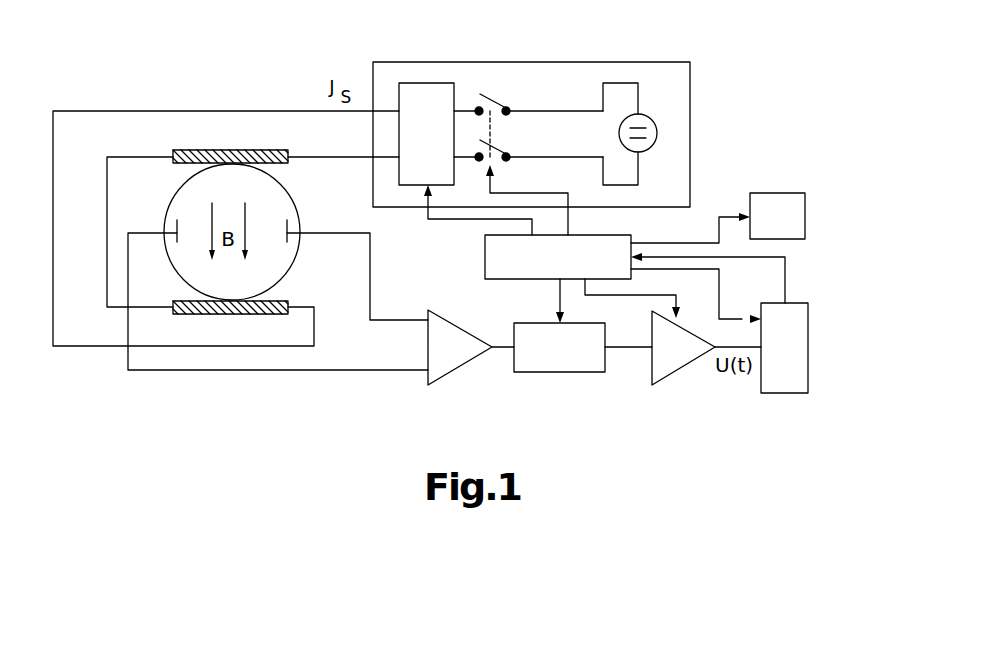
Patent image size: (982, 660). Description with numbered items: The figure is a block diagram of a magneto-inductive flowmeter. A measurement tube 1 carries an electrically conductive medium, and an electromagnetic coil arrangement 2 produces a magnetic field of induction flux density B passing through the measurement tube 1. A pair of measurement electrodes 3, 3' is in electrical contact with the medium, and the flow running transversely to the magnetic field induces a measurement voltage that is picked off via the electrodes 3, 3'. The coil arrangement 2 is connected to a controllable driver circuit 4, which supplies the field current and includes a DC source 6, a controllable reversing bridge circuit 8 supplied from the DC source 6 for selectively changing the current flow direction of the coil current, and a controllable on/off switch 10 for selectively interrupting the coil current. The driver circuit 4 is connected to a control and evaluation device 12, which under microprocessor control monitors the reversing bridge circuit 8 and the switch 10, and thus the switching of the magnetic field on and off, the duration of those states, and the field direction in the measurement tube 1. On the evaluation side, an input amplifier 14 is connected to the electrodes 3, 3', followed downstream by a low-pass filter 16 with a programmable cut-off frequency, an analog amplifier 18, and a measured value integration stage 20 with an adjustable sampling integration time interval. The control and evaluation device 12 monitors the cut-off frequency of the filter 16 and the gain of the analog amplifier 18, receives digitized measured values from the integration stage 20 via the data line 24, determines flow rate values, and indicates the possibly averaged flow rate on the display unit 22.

The measurement tube 1 is at (291, 268).
The electromagnetic coil arrangement 2 is at (226, 150).
The measurement electrode 3 is at (158, 210).
The measurement electrode 3' is at (307, 218).
The controllable driver circuit 4 is at (570, 62).
The DC source 6 is at (657, 131).
The controllable reversing bridge circuit 8 is at (422, 100).
The controllable on/off switch 10 is at (490, 97).
The control and evaluation device 12 is at (500, 252).
The input amplifier 14 is at (452, 352).
The low-pass filter 16 is at (567, 350).
The analog amplifier 18 is at (672, 355).
The measured value integration stage 20 is at (800, 338).
The display unit 22 is at (772, 208).
The data line 24 is at (786, 275).